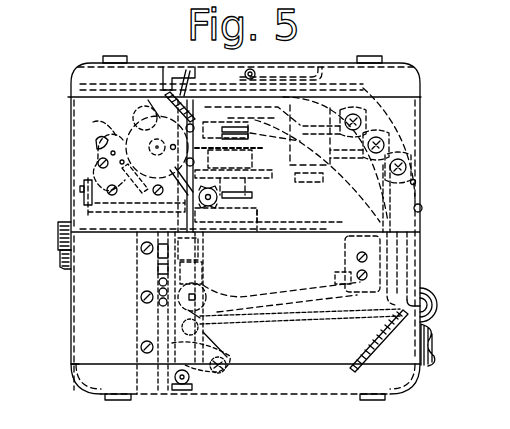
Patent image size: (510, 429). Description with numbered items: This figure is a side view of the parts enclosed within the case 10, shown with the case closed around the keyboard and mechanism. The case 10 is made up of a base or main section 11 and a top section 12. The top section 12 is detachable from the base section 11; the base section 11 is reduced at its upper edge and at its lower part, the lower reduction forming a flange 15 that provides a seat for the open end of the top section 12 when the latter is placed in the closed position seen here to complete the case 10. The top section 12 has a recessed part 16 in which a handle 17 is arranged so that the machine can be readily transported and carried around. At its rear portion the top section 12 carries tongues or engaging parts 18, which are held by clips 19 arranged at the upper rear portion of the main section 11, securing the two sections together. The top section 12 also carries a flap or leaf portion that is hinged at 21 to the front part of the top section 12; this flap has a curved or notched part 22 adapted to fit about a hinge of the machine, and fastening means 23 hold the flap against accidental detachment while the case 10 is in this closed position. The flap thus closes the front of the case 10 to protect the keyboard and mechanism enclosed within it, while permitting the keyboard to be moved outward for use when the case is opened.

The case 10 is at (85, 170).
The base or main section 11 is at (85, 303).
The top section 12 is at (83, 117).
The flange 15 is at (71, 368).
The recessed part 16 is at (217, 83).
The handle 17 is at (293, 71).
The tongues or engaging parts 18 is at (57, 232).
The clips 19 is at (57, 252).
The hinge 21 is at (423, 208).
The curved or notched part 22 is at (430, 300).
The fastening means 23 is at (436, 352).